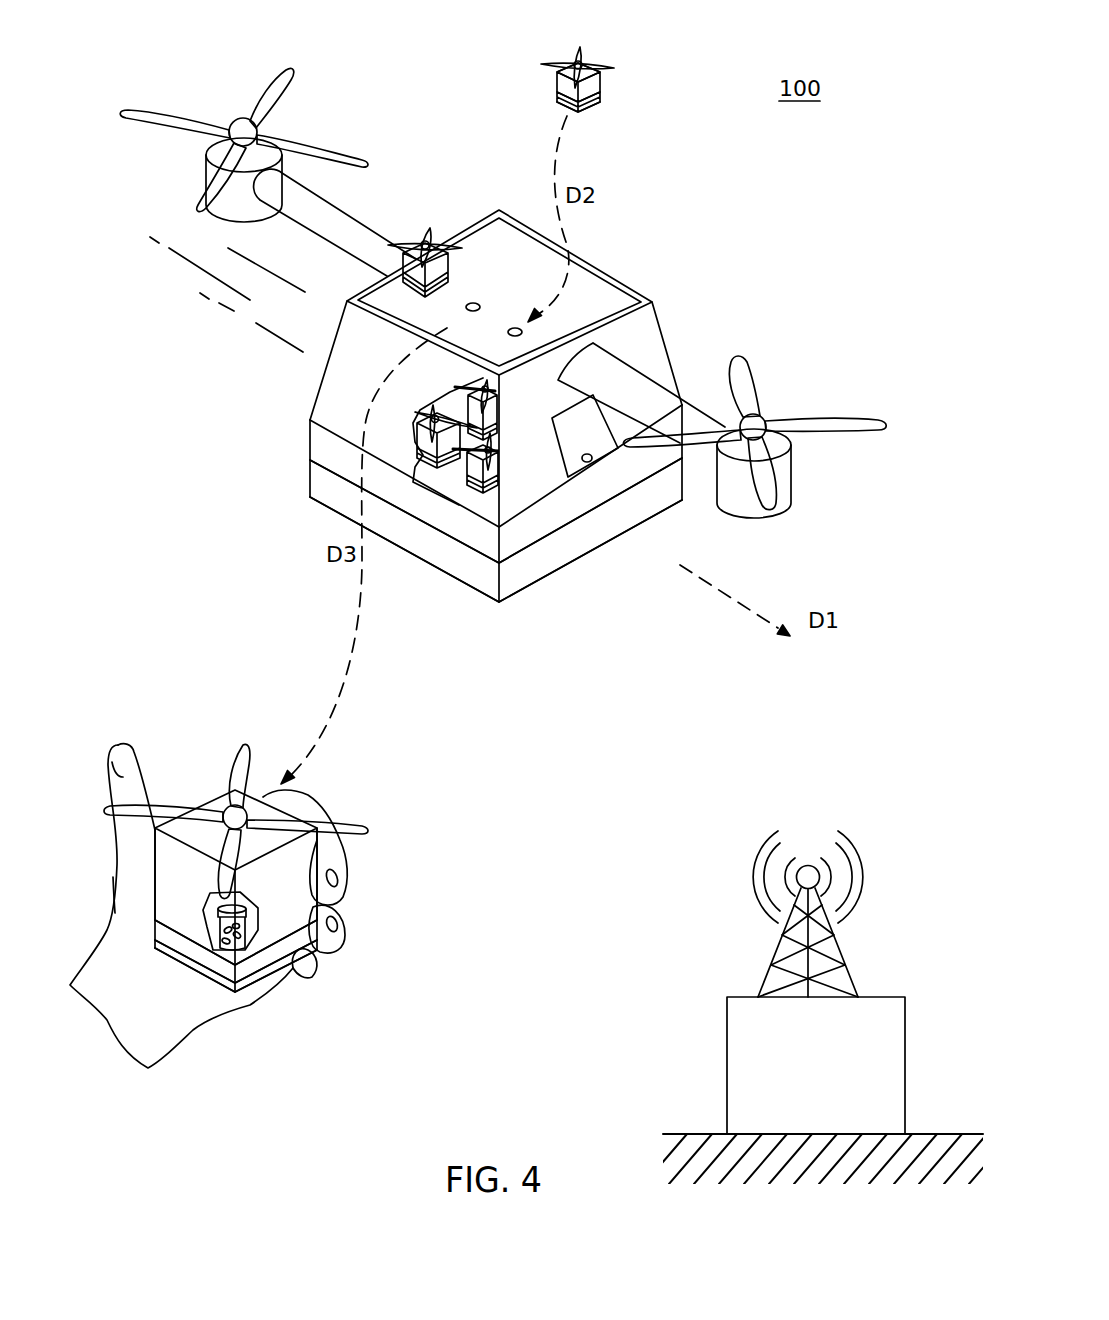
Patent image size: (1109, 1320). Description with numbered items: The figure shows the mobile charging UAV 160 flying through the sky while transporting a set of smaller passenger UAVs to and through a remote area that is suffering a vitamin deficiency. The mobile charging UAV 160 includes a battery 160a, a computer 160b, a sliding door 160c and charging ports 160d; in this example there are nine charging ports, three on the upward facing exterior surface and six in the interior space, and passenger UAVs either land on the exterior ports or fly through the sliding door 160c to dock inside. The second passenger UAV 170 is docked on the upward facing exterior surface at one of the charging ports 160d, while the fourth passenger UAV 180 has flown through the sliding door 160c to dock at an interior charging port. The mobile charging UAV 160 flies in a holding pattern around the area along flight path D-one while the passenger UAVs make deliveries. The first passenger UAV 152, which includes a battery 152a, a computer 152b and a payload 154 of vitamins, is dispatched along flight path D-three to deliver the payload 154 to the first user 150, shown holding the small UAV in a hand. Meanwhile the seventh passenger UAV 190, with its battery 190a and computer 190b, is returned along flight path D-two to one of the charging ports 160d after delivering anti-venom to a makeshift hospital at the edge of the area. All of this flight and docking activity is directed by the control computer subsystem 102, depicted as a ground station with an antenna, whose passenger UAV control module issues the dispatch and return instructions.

The control computer subsystem 102 is at (727, 1056).
The first user 150 is at (245, 1010).
The first passenger UAV 152 is at (398, 594).
The battery 152a is at (277, 963).
The computer 152b is at (300, 933).
The payload 154 is at (193, 917).
The mobile charging UAV 160 is at (658, 306).
The battery 160a is at (517, 577).
The computer 160b is at (523, 528).
The sliding door 160c is at (591, 461).
The charging ports 160d is at (480, 305).
The second passenger UAV 170 is at (416, 232).
The fourth passenger UAV 180 is at (480, 477).
The seventh passenger UAV 190 is at (600, 82).
The battery 190a is at (567, 112).
The computer 190b is at (557, 91).